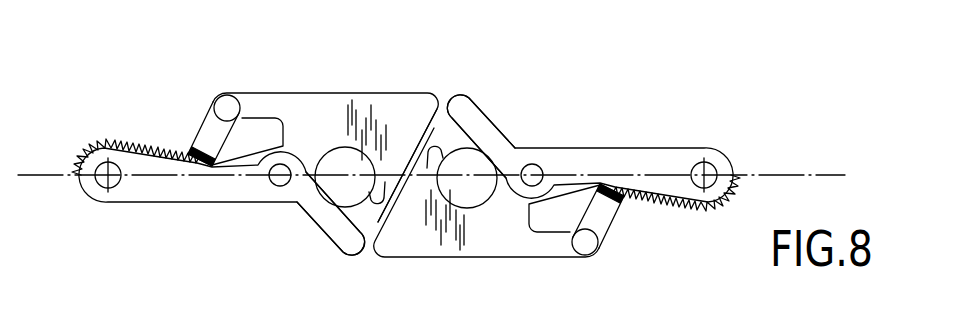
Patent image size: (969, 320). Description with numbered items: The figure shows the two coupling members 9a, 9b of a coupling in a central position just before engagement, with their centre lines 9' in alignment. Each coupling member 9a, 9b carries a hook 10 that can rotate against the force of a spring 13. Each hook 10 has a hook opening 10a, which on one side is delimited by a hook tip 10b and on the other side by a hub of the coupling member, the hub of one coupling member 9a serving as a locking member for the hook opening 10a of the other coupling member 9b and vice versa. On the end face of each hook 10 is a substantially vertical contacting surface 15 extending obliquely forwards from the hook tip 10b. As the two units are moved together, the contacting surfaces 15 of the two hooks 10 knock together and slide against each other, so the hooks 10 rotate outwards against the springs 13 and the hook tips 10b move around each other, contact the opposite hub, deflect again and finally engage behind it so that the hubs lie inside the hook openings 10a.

The centre line 9' is at (431, 100).
The coupling member 9a is at (640, 160).
The coupling member 9b is at (143, 190).
The hook 10 is at (287, 113).
The hook opening 10a is at (312, 218).
The hook tip 10b is at (433, 157).
The spring 13 is at (115, 140).
The contacting surface 15 is at (441, 135).